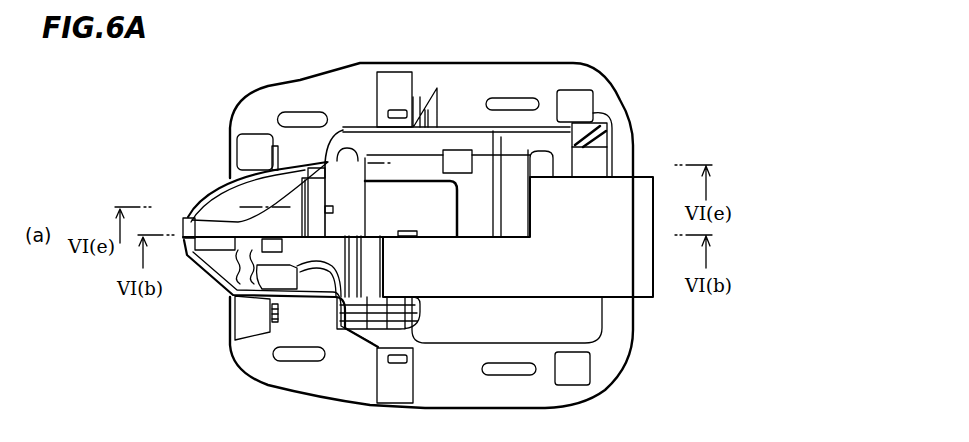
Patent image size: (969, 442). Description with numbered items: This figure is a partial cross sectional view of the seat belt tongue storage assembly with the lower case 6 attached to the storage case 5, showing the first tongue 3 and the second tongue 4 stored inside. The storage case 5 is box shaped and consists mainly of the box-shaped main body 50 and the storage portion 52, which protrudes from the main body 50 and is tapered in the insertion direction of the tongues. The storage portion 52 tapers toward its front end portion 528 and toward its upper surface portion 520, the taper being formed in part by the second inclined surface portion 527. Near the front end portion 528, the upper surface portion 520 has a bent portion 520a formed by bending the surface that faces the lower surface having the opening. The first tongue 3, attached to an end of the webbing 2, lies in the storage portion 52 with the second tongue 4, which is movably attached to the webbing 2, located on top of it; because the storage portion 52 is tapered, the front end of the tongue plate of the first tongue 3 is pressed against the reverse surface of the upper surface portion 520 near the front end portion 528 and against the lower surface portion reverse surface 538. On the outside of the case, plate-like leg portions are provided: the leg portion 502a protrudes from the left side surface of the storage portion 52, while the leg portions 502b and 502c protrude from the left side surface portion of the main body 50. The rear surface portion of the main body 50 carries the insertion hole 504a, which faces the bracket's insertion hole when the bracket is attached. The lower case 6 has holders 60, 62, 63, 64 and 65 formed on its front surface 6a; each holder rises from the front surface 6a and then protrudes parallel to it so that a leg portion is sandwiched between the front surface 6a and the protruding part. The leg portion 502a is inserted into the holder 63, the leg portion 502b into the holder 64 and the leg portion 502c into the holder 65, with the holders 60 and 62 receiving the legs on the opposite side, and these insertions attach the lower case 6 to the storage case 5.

The webbing 2 is at (637, 283).
The first tongue 3 is at (218, 243).
The second tongue 4 is at (233, 295).
The storage case 5 is at (186, 295).
The lower case 6 is at (605, 63).
The front surface 6a is at (610, 98).
The main body 50 is at (468, 122).
The storage portion 52 is at (326, 166).
The holder 60 is at (250, 320).
The holder 62 is at (570, 373).
The holder 63 is at (260, 145).
The holder 64 is at (393, 82).
The holder 65 is at (572, 97).
The leg portion 502a is at (281, 147).
The leg portion 502b is at (417, 130).
The leg portion 502c is at (603, 132).
The insertion hole 504a is at (555, 163).
The upper surface portion 520 is at (240, 139).
The bent portion 520a is at (238, 222).
The second inclined surface portion 527 is at (248, 188).
The front end portion 528 is at (190, 213).
The lower surface portion reverse surface 538 is at (225, 264).